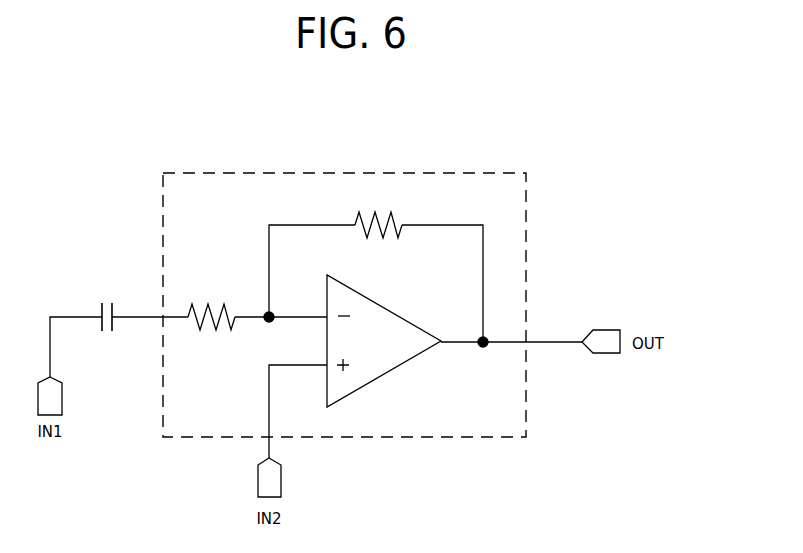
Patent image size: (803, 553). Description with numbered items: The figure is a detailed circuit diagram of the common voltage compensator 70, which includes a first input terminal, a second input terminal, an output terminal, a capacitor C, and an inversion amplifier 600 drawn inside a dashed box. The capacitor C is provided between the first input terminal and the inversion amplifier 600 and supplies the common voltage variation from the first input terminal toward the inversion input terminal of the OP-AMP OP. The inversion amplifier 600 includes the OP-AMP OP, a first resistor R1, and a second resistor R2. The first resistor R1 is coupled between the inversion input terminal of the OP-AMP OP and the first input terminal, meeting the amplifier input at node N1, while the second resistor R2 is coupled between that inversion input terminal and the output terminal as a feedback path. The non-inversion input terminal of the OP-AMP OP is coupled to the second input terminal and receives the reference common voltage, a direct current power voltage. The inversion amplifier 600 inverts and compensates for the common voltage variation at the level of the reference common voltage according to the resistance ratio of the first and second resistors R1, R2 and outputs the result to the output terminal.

The common voltage compensator 70 is at (499, 157).
The inversion amplifier 600 is at (526, 252).
The capacitor C is at (106, 307).
The first resistor R1 is at (211, 307).
The second resistor R2 is at (378, 214).
The first node N1 is at (271, 330).
The OP-AMP OP is at (403, 365).